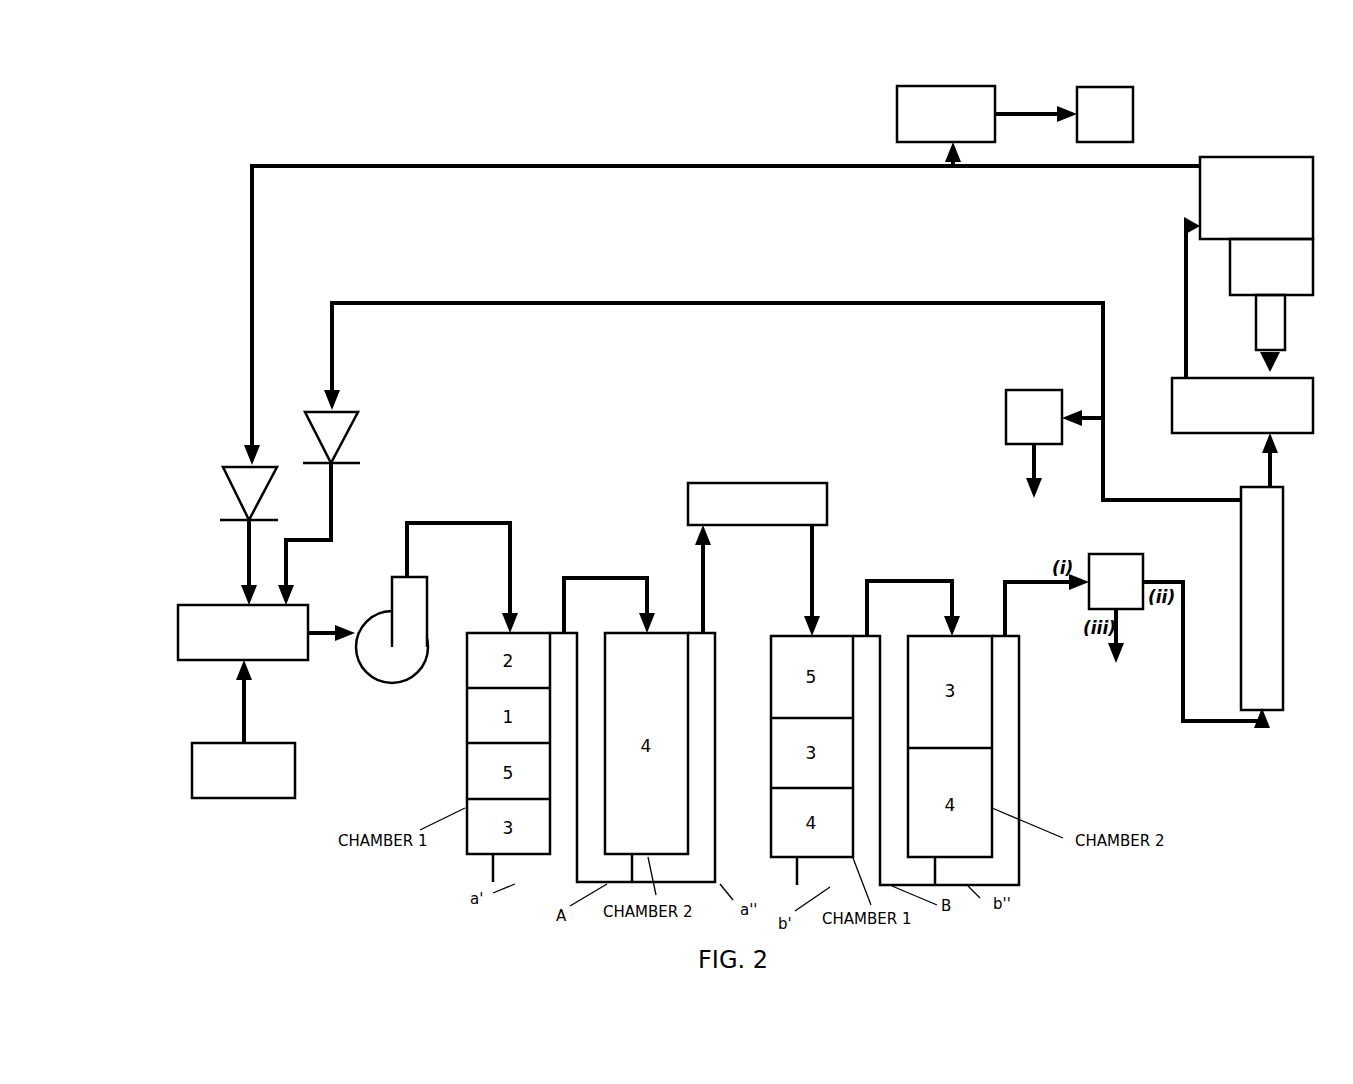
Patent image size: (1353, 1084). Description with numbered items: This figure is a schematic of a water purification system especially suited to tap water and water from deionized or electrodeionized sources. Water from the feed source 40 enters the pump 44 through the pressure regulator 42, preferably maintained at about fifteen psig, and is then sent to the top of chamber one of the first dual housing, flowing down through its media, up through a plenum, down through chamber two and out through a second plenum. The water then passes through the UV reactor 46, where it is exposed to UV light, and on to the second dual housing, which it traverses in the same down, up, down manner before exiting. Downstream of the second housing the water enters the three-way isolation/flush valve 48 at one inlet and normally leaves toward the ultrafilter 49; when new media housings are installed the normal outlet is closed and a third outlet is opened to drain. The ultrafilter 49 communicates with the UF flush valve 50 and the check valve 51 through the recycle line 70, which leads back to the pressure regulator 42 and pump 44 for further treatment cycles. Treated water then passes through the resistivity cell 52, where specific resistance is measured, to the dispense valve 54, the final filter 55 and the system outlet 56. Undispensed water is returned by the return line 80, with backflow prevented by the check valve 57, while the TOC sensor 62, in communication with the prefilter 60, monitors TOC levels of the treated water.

The feed source 40 is at (272, 800).
The pressure regulator 42 is at (213, 661).
The pump 44 is at (401, 680).
The UV reactor 46 is at (762, 483).
The ultrafilter isolation/flush valve 48 is at (1145, 567).
The ultrafilter 49 is at (1238, 642).
The UF flush valve 50 is at (1006, 430).
The check valve 51 is at (357, 428).
The resistivity cell 52 is at (1203, 433).
The dispense valve 54 is at (1250, 158).
The final filter 55 is at (1228, 258).
The outlet 56 is at (1287, 328).
The check valve 57 is at (235, 492).
The prefilter 60 is at (897, 117).
The TOC sensor 62 is at (1135, 122).
The recycle line 70 is at (740, 307).
The return line 80 is at (693, 168).